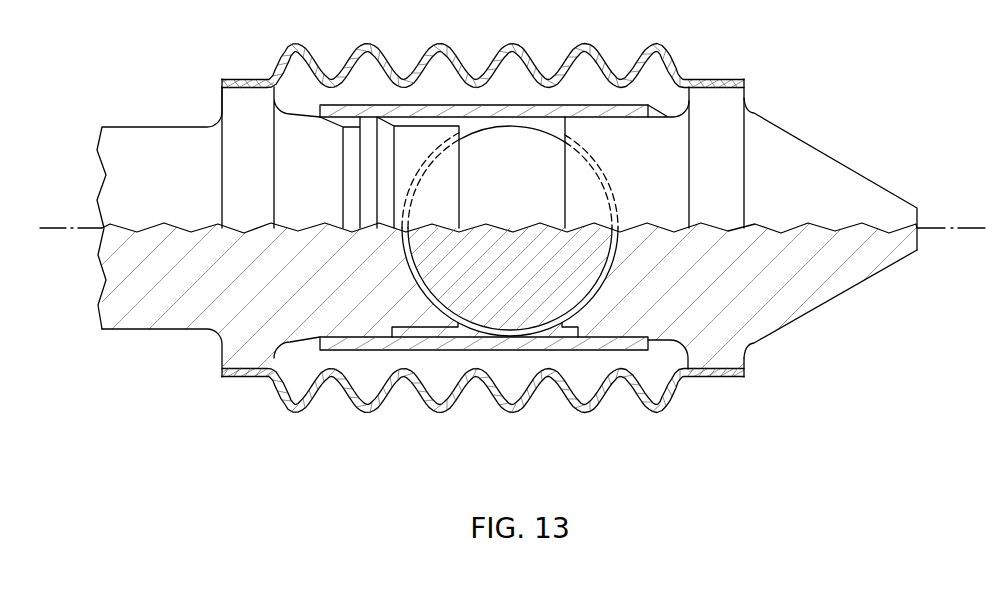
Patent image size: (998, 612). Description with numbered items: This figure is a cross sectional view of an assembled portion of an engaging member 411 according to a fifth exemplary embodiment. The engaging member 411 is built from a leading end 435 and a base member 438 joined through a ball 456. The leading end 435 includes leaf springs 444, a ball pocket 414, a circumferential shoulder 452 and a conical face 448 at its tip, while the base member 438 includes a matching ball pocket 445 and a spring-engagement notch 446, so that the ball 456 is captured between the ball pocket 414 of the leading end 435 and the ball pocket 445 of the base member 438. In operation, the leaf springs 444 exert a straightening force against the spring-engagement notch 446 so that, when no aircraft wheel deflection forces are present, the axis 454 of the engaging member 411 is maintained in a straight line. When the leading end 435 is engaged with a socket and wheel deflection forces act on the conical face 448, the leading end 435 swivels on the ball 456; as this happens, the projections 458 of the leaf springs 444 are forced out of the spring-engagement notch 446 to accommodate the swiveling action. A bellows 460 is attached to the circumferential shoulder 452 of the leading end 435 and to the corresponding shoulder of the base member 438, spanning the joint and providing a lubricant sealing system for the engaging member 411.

The engaging member 411 is at (176, 130).
The ball pocket 414 is at (612, 176).
The leading end 435 is at (829, 166).
The base member 438 is at (157, 330).
The leaf springs 444 is at (513, 112).
The ball pocket 445 is at (427, 285).
The spring-engagement notch 446 is at (333, 137).
The conical face 448 is at (861, 281).
The circumferential shoulder 452 is at (742, 98).
The axis 454 is at (955, 227).
The ball 456 is at (585, 268).
The projections 458 is at (345, 345).
The bellows 460 is at (508, 386).